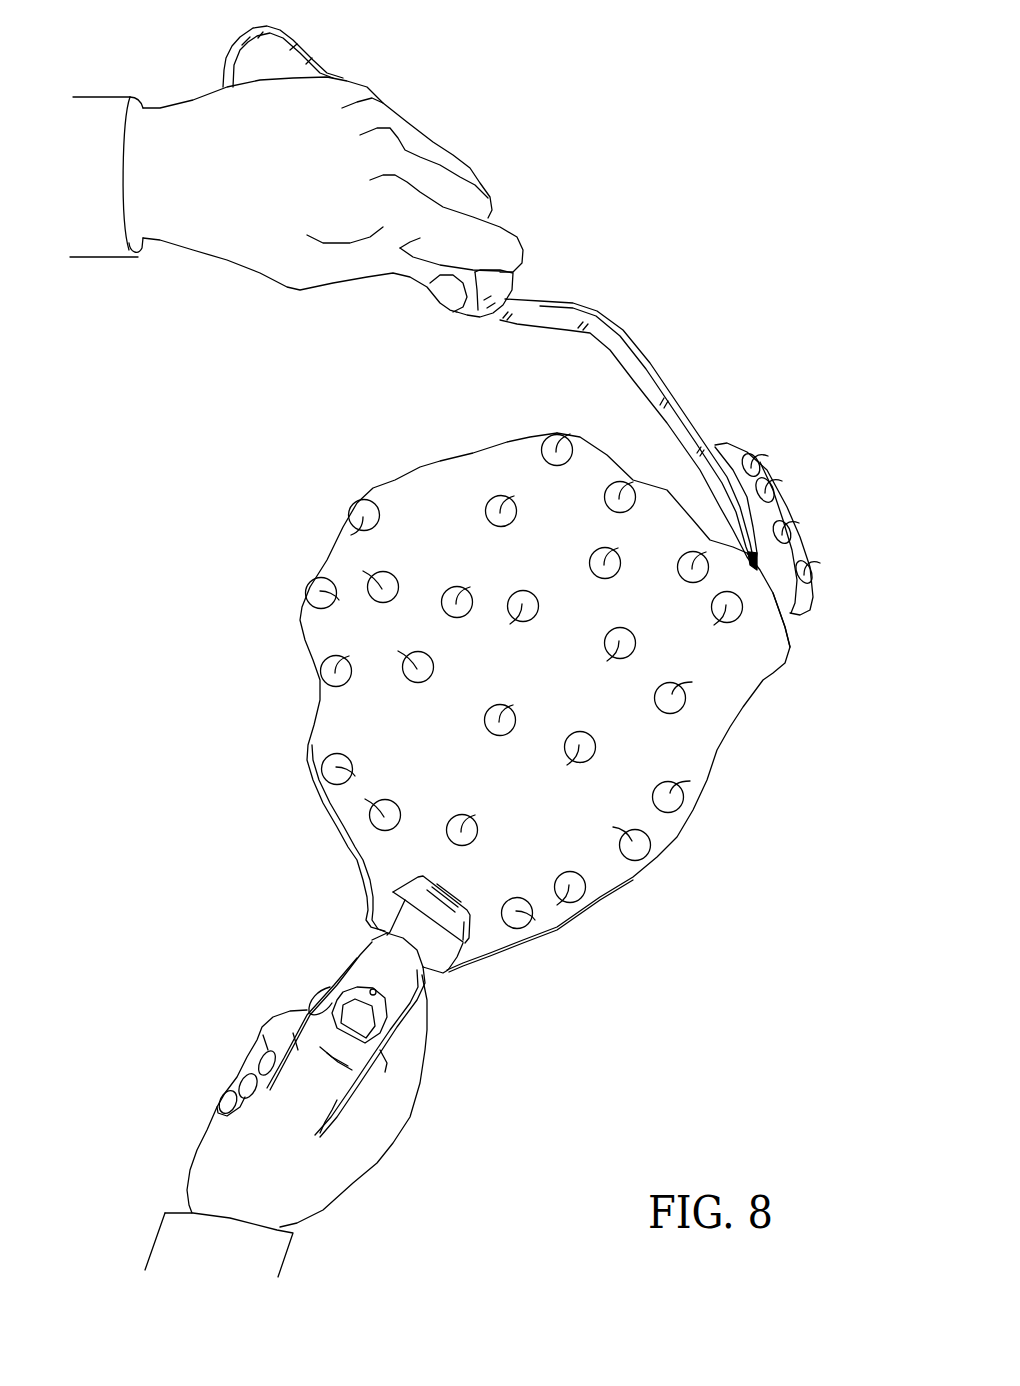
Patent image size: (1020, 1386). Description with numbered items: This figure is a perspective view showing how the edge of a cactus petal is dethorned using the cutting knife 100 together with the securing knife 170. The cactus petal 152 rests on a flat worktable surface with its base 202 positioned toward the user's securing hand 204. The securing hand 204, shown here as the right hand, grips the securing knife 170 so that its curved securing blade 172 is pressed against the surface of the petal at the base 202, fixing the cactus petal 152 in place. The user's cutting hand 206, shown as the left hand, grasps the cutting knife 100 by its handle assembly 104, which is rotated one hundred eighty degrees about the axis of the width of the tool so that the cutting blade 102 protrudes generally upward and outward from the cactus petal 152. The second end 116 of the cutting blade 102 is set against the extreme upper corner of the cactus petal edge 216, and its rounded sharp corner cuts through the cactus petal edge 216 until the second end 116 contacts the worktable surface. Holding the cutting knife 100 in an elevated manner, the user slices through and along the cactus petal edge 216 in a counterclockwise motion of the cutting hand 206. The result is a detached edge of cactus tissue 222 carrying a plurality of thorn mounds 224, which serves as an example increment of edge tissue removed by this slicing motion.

The cactus petal cutting knife 100 is at (628, 284).
The cutting blade 102 is at (633, 333).
The handle assembly 104 is at (480, 307).
The second end 116 is at (787, 514).
The cactus petal 152 is at (569, 699).
The cactus dethorning securing knife 170 is at (402, 1006).
The curved securing blade 172 is at (433, 933).
The base 202 is at (375, 860).
The securing hand 204 is at (358, 1147).
The cutting hand 206 is at (228, 247).
The cactus petal edge 216 is at (788, 625).
The detached edge of cactus tissue 222 is at (763, 474).
The thorn mounds 224 is at (775, 498).